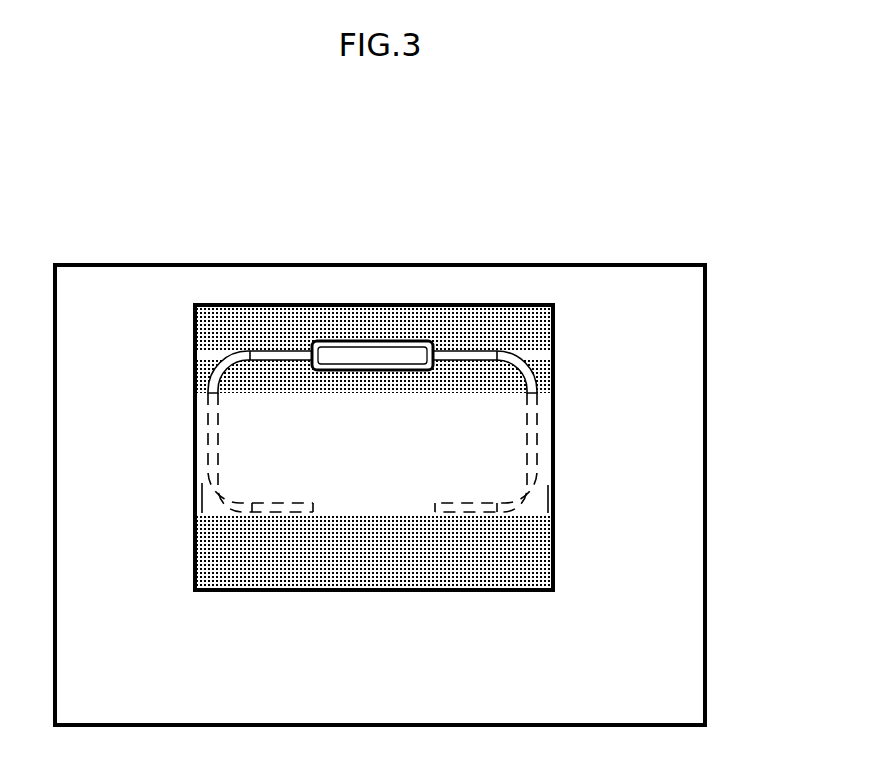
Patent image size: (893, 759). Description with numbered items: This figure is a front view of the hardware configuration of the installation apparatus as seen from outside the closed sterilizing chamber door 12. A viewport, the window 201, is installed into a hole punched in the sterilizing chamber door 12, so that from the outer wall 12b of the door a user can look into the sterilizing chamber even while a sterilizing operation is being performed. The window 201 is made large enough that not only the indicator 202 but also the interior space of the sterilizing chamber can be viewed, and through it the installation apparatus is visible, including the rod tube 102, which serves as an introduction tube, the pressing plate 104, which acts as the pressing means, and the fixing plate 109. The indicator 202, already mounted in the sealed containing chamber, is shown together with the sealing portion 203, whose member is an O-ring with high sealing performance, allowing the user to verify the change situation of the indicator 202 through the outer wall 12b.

The sterilizing chamber door 12 is at (718, 656).
The outer wall 12b is at (165, 681).
The rod tube 102 is at (548, 431).
The pressing plate 104 is at (411, 442).
The fixing plate 109 is at (365, 509).
The window 201 is at (445, 573).
The indicator 202 is at (367, 337).
The sealing portion 203 is at (443, 329).